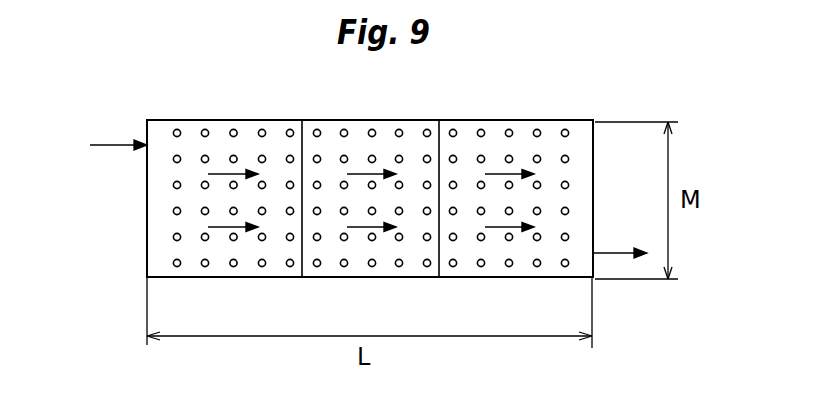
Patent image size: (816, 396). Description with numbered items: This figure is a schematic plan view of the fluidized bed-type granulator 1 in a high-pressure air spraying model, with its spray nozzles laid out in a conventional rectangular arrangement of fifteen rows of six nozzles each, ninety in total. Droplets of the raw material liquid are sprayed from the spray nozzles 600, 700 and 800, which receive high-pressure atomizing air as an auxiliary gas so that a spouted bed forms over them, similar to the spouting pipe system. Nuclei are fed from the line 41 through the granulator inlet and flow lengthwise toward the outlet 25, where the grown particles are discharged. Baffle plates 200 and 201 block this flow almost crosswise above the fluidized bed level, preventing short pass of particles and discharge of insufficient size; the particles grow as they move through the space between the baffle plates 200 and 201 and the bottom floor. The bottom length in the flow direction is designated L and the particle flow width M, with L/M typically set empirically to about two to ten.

The plate / honeycomb body 1 is at (377, 120).
The line 41 is at (111, 147).
The outlet flow 25 is at (618, 252).
The spray nozzle 600 is at (179, 157).
The spray nozzle 700 is at (173, 185).
The spray nozzle 800 is at (173, 237).
The baffle plate 200 is at (300, 277).
The baffle plate 201 is at (438, 277).